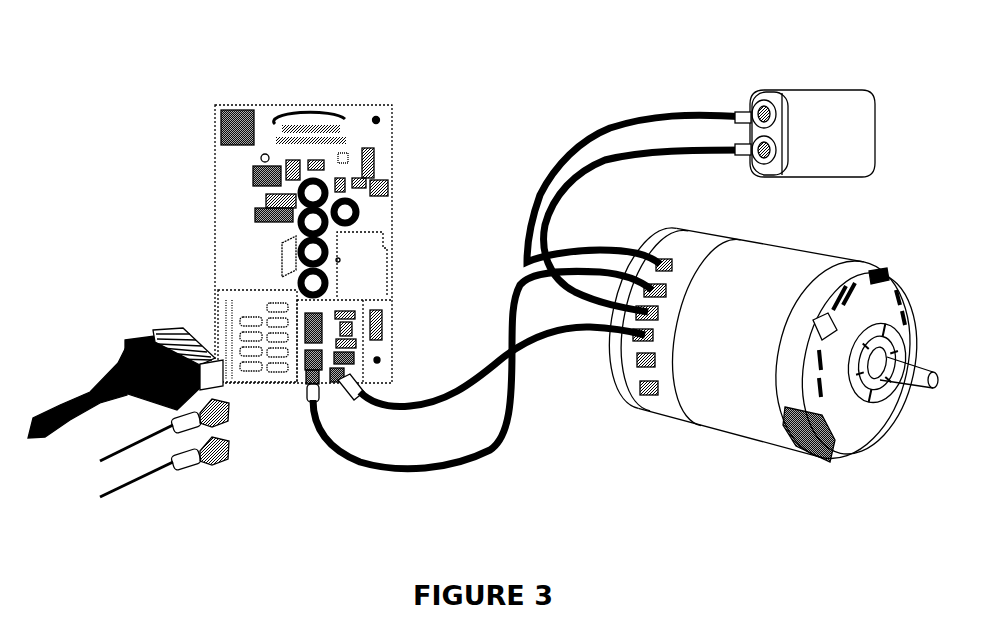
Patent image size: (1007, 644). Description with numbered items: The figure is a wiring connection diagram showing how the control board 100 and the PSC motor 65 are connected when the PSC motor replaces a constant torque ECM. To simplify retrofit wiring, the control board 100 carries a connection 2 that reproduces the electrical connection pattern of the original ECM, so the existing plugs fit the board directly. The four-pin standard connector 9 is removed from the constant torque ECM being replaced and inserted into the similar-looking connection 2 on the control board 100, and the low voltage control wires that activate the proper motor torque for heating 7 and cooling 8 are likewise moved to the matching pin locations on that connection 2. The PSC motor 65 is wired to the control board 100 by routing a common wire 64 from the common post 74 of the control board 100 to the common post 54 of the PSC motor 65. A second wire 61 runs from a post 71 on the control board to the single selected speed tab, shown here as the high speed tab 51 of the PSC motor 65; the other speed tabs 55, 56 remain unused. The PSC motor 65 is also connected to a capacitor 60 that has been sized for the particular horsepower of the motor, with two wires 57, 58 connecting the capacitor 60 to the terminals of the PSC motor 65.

The control board 100 is at (268, 116).
The connection 2 is at (237, 298).
The 4-pin standard connector 9 is at (140, 338).
The low voltage control wire for heating 7 is at (220, 413).
The low voltage control wire for cooling 8 is at (220, 445).
The common post 74 is at (300, 386).
The board connector terminal 71 is at (341, 390).
The common wire 64 is at (353, 473).
The wire 61 is at (545, 350).
The wire 57 is at (612, 124).
The wire 58 is at (702, 148).
The capacitor 60 is at (826, 148).
The PSC motor 65 is at (760, 282).
The common post 54 is at (673, 247).
The capacitor terminal 55 is at (645, 283).
The capacitor terminal 56 is at (628, 318).
The high speed tab 51 is at (660, 350).